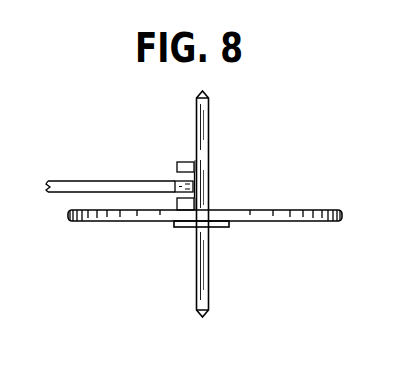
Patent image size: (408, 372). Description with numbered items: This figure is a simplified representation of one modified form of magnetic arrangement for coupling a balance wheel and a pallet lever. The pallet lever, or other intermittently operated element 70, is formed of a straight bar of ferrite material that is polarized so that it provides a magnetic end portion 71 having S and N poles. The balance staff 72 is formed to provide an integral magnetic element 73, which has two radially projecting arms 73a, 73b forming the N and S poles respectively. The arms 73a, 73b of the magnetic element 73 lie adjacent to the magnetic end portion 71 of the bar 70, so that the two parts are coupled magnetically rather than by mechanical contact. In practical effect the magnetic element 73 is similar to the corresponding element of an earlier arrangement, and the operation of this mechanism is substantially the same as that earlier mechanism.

The arm 70 is at (106, 185).
The magnetic end portion 71 is at (166, 181).
The balance staff 72 is at (206, 118).
The magnetic element 73 is at (210, 176).
The radially projecting arm 73a is at (189, 162).
The radially projecting arm 73b is at (176, 217).